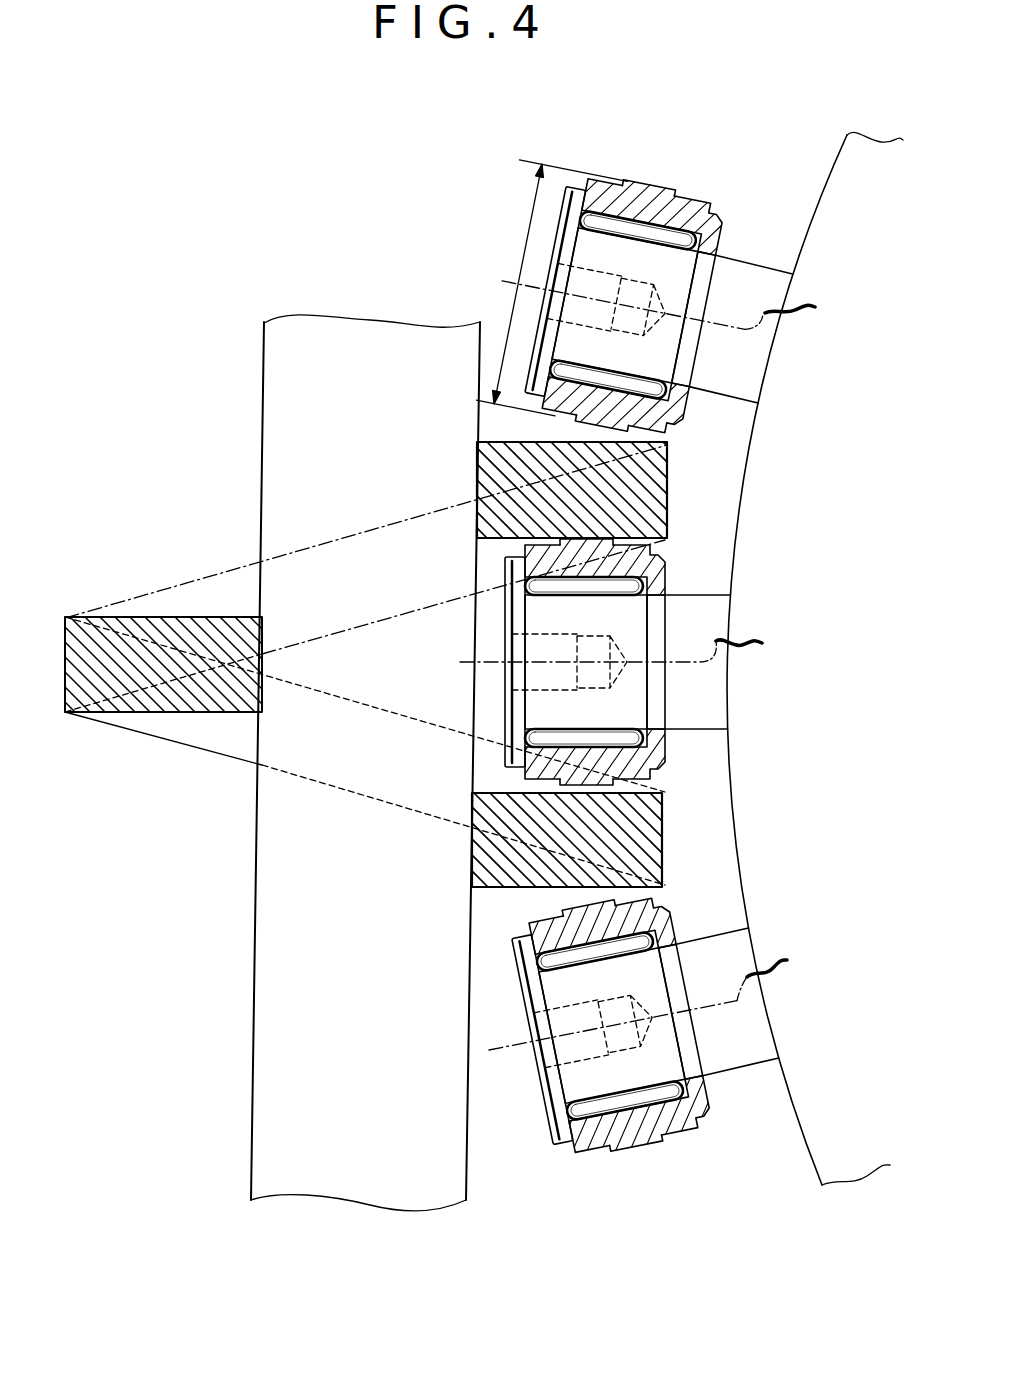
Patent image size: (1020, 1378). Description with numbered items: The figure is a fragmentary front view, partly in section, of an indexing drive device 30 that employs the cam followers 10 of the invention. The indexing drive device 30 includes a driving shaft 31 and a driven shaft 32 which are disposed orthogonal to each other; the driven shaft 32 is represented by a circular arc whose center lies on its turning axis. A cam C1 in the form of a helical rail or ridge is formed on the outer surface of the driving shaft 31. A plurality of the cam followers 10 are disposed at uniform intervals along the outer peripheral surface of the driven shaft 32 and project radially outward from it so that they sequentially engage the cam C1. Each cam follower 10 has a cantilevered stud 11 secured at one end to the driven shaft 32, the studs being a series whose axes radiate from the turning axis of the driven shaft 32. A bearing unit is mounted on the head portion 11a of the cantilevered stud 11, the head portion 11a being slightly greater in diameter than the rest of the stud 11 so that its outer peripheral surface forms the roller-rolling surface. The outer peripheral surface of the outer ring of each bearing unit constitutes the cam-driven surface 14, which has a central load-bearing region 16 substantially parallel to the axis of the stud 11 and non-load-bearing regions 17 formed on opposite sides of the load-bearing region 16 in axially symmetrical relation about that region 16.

The cam follower 10 is at (650, 676).
The cantilevered stud 11 is at (753, 273).
The head portion 11a is at (593, 245).
The cam-driven surface 14 is at (622, 676).
The load-bearing region 16 is at (653, 180).
The non-load-bearing regions 17 is at (758, 100).
The indexing drive device 30 is at (333, 763).
The driving shaft 31 is at (258, 947).
The driven shaft 32 is at (747, 813).
The cam C1 is at (655, 494).